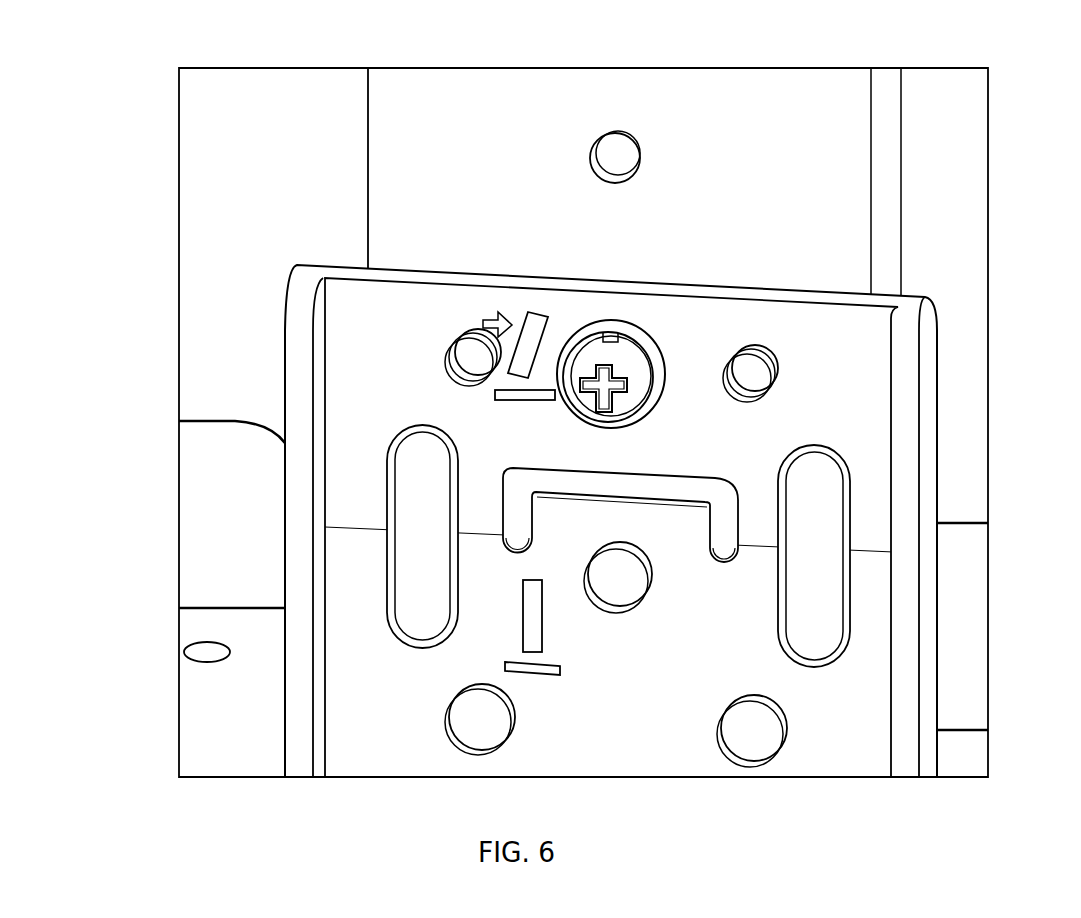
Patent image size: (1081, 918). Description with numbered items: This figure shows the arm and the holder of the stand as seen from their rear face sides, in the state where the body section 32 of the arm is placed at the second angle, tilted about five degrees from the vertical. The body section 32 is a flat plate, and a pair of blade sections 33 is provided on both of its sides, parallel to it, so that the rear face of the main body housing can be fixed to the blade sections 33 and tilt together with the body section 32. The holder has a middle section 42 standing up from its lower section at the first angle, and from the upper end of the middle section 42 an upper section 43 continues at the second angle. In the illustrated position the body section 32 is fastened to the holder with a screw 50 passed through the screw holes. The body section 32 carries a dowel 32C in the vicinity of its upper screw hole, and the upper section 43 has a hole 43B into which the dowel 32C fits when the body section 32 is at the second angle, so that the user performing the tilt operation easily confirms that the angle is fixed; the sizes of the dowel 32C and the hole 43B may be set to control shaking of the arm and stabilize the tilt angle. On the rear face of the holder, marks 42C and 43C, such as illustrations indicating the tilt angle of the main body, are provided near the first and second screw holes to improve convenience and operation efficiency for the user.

The body section 32 is at (757, 76).
The blade sections 33 is at (303, 76).
The dowel 32C is at (485, 357).
The middle section 42 is at (865, 675).
The mark 42C is at (530, 617).
The upper section 43 is at (863, 472).
The hole 43B is at (455, 385).
The mark 43C is at (537, 328).
The screw 50 is at (620, 358).